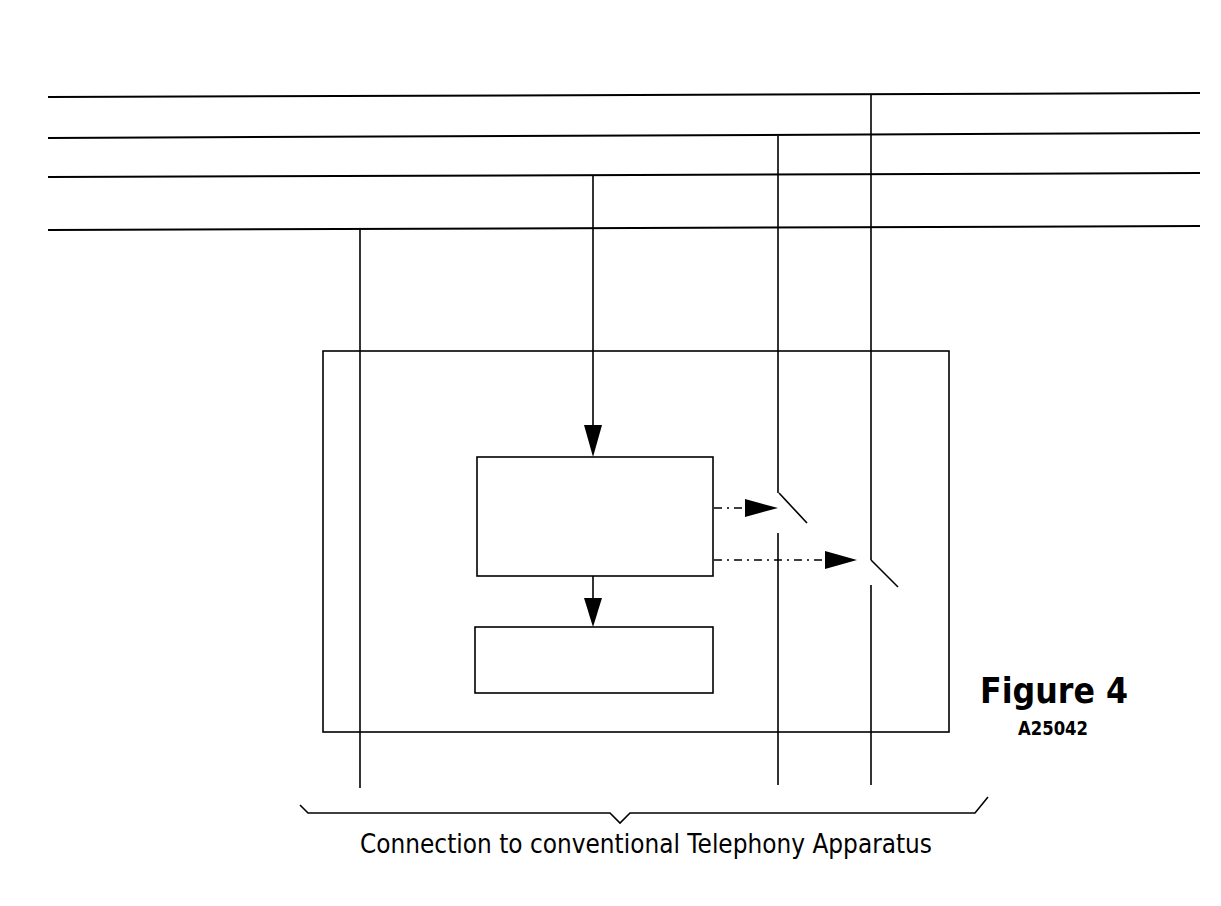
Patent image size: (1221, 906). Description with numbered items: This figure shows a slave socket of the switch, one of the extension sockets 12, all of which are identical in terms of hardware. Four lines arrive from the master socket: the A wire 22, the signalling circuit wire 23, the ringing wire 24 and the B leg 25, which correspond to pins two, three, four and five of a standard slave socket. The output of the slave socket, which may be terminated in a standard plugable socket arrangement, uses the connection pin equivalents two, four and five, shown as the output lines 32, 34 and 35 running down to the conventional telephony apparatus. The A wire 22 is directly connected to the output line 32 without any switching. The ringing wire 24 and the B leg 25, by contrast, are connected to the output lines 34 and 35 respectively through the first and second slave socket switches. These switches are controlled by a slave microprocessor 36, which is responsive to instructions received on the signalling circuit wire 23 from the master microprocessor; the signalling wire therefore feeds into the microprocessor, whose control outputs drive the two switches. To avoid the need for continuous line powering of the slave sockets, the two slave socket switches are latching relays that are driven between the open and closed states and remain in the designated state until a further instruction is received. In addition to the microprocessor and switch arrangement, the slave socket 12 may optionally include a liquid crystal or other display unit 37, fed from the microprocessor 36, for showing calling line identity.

The extension socket 12 is at (1066, 39).
The A wire 22 is at (1028, 226).
The signalling circuit wire 23 is at (1028, 173).
The ringing wire 24 is at (1028, 133).
The B leg 25 is at (1013, 93).
The output line 32 is at (360, 777).
The output line 34 is at (779, 773).
The output line 35 is at (871, 772).
The slave microprocessor 36 is at (650, 458).
The calling line identity display 37 is at (683, 628).